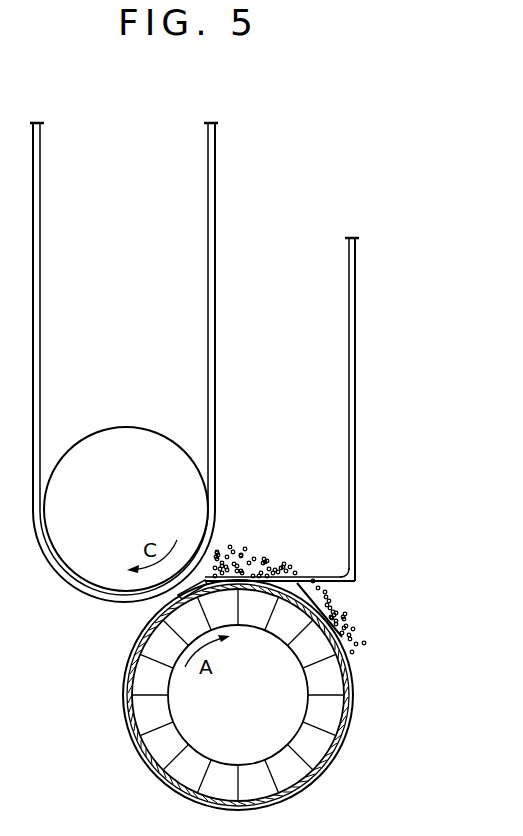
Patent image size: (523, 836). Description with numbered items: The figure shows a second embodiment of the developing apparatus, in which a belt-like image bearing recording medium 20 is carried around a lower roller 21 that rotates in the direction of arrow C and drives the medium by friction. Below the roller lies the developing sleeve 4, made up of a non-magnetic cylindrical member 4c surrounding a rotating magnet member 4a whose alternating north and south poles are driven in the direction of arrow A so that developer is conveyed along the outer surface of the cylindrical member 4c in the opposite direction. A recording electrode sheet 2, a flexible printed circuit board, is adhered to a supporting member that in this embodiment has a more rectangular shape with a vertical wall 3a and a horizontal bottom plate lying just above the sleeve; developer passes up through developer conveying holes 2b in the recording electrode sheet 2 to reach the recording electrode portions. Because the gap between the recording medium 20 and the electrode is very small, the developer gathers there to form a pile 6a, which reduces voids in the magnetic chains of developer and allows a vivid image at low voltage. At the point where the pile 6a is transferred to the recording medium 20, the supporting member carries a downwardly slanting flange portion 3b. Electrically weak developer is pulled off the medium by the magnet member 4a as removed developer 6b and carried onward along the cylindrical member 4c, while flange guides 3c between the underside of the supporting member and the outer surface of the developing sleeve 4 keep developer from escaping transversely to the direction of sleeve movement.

The recording medium 20 is at (216, 180).
The lower roller 21 is at (120, 440).
The hopper side wall 3a is at (356, 471).
The recording electrode sheet 2 is at (345, 568).
The developer conveying holes 2b is at (299, 574).
The downwardly slanting flange portion 3b is at (165, 603).
The flange guides 3c is at (330, 607).
The pile of developer 6a is at (236, 545).
The removed developer 6b is at (353, 655).
The developing sleeve 4 is at (240, 699).
The magnet member 4a is at (320, 742).
The cylindrical member 4c is at (303, 785).